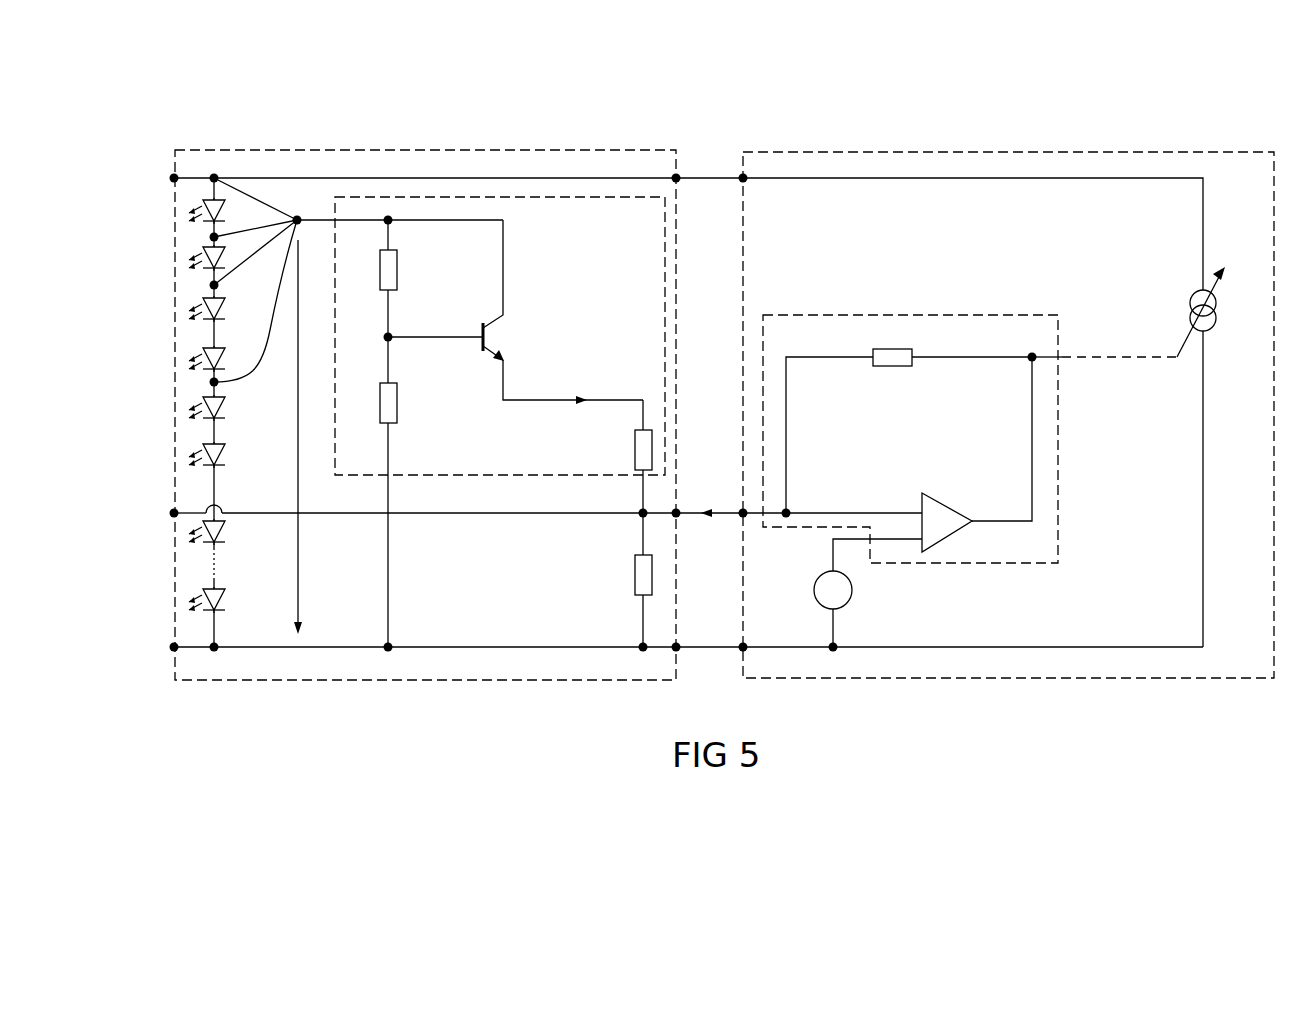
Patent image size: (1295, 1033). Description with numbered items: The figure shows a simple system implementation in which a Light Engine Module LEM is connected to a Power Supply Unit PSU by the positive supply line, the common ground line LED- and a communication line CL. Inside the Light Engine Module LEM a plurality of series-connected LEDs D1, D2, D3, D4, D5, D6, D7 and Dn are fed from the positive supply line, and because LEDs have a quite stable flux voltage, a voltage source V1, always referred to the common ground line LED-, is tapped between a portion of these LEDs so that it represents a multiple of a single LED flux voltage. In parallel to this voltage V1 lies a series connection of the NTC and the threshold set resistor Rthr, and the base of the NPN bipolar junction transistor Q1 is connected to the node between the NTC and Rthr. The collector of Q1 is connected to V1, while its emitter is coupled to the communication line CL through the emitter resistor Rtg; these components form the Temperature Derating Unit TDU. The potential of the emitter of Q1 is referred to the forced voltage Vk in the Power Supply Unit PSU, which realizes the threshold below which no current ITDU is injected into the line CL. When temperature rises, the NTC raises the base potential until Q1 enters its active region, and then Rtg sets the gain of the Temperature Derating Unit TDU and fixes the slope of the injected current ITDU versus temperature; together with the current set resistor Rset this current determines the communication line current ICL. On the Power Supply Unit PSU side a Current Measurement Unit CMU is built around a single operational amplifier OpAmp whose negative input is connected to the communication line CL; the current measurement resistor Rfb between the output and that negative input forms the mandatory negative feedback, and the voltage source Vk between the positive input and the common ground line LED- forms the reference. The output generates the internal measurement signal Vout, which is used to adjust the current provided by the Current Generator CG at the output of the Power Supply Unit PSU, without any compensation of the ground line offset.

The Light Engine Module LEM is at (437, 146).
The Temperature Derating Unit TDU is at (582, 197).
The Power Supply Unit PSU is at (951, 146).
The Current Measurement Unit CMU is at (847, 310).
The common ground line LED- is at (687, 491).
The LED D1 is at (221, 211).
The LED D2 is at (221, 258).
The LED D3 is at (221, 309).
The LED D4 is at (221, 359).
The LED D5 is at (221, 408).
The LED D6 is at (221, 455).
The LED D7 is at (221, 532).
The LED Dn is at (221, 600).
The voltage source V1 is at (301, 406).
The element NTC is at (409, 277).
The threshold set resistor Rthr is at (410, 490).
The NPN Bipolar Junction Transistor Q1 is at (515, 310).
The injected current ITDU is at (570, 416).
The emitter resistor Rtg is at (624, 456).
The current set resistor Rset is at (621, 580).
The communication line CL is at (532, 504).
The communication line current ICL is at (707, 529).
The current measurement resistor Rfb is at (909, 420).
The internal measurement signal Vout is at (1074, 427).
The operational amplifier OpAmp is at (981, 522).
The voltage source Vk is at (856, 593).
The Current Generator CG is at (1215, 312).